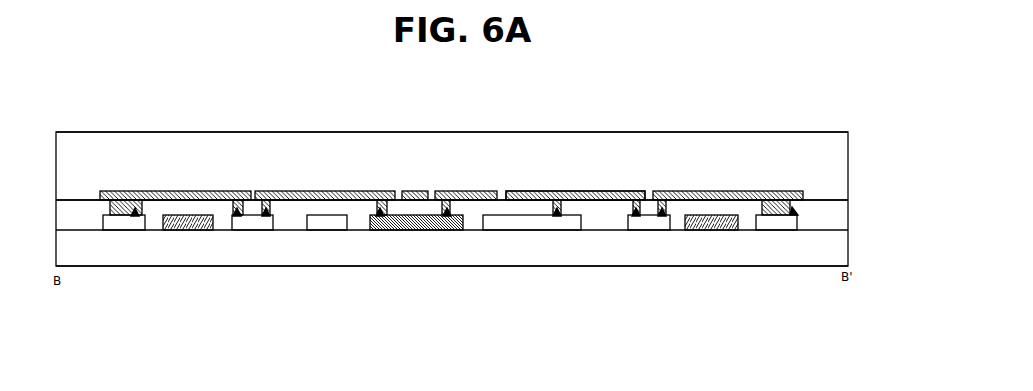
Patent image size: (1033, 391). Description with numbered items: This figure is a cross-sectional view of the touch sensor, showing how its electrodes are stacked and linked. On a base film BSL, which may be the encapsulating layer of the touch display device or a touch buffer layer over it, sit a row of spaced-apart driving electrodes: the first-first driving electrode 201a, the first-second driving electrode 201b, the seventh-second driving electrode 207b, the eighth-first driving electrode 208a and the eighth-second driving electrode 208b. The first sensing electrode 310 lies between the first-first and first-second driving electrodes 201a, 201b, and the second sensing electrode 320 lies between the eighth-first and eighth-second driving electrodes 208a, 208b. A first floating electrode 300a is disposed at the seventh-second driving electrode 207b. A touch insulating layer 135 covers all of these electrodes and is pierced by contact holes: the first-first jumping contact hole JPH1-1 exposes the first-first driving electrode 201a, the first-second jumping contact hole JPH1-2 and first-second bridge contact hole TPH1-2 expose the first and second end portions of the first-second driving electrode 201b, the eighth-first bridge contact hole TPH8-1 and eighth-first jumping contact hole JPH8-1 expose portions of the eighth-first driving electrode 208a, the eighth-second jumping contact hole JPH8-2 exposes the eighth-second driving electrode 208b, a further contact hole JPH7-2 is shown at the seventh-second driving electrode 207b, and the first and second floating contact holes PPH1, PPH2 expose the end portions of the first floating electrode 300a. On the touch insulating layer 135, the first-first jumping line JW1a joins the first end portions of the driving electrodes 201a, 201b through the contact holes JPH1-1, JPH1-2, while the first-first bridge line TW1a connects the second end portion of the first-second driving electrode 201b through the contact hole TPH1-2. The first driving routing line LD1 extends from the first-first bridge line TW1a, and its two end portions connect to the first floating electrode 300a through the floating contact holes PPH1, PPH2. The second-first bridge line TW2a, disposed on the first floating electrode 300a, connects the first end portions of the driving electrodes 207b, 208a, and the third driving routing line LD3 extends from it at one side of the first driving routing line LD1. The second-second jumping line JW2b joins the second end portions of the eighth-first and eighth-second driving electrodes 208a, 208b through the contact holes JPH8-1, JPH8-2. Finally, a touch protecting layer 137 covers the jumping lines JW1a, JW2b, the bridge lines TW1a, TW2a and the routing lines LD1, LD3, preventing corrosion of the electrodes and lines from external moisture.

The touch protecting layer 137 is at (825, 143).
The touch insulating layer 135 is at (848, 213).
The base film BSL is at (840, 245).
The first-first jumping line JW1a is at (127, 190).
The first-first bridge line TW1a is at (283, 190).
The second-first bridge line TW2a is at (416, 190).
The first driving routing line LD1 is at (363, 190).
The third driving routing line LD3 is at (531, 190).
The second-second jumping line JW2b is at (722, 190).
The first-first driving electrode 201a is at (123, 222).
The first sensing electrode 310 is at (188, 222).
The first-second driving electrode 201b is at (253, 222).
The seventh-second driving electrode 207b is at (325, 222).
The first floating electrode 300a is at (415, 222).
The eighth-first driving electrode 208a is at (649, 222).
The second sensing electrode 320 is at (712, 222).
The eighth-second driving electrode 208b is at (765, 222).
The first-first jumping contact hole JPH1-1 is at (135, 216).
The first-second jumping contact hole JPH1-2 is at (237, 216).
The first-second bridge contact hole TPH1-2 is at (266, 216).
The first floating contact hole PPH1 is at (380, 216).
The second floating contact hole PPH2 is at (447, 216).
The jumping contact hole JPH7-2 is at (557, 216).
The eighth-first bridge contact hole TPH8-1 is at (636, 216).
The eighth-first jumping contact hole JPH8-1 is at (662, 216).
The eighth-second jumping contact hole JPH8-2 is at (795, 216).